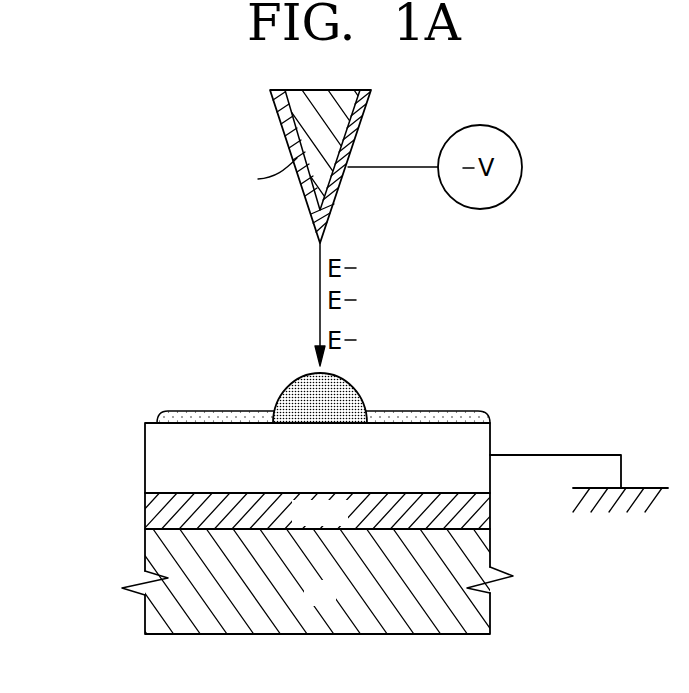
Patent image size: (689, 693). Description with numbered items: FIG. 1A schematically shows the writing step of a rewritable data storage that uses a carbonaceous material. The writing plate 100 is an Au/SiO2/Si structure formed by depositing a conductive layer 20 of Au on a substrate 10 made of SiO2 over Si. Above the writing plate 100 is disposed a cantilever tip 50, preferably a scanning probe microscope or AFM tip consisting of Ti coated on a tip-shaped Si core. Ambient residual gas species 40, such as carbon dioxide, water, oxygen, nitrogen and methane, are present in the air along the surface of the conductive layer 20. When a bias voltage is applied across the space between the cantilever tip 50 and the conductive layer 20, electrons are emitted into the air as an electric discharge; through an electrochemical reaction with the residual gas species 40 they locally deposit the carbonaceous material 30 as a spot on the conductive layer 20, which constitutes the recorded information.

The cantilever tip 50 is at (297, 107).
The carbonaceous material 30 is at (290, 397).
The ambient residual gas species 40 is at (393, 410).
The conductive layer 20 is at (485, 437).
The substrate 10 is at (518, 493).
The writing plate 100 is at (118, 425).